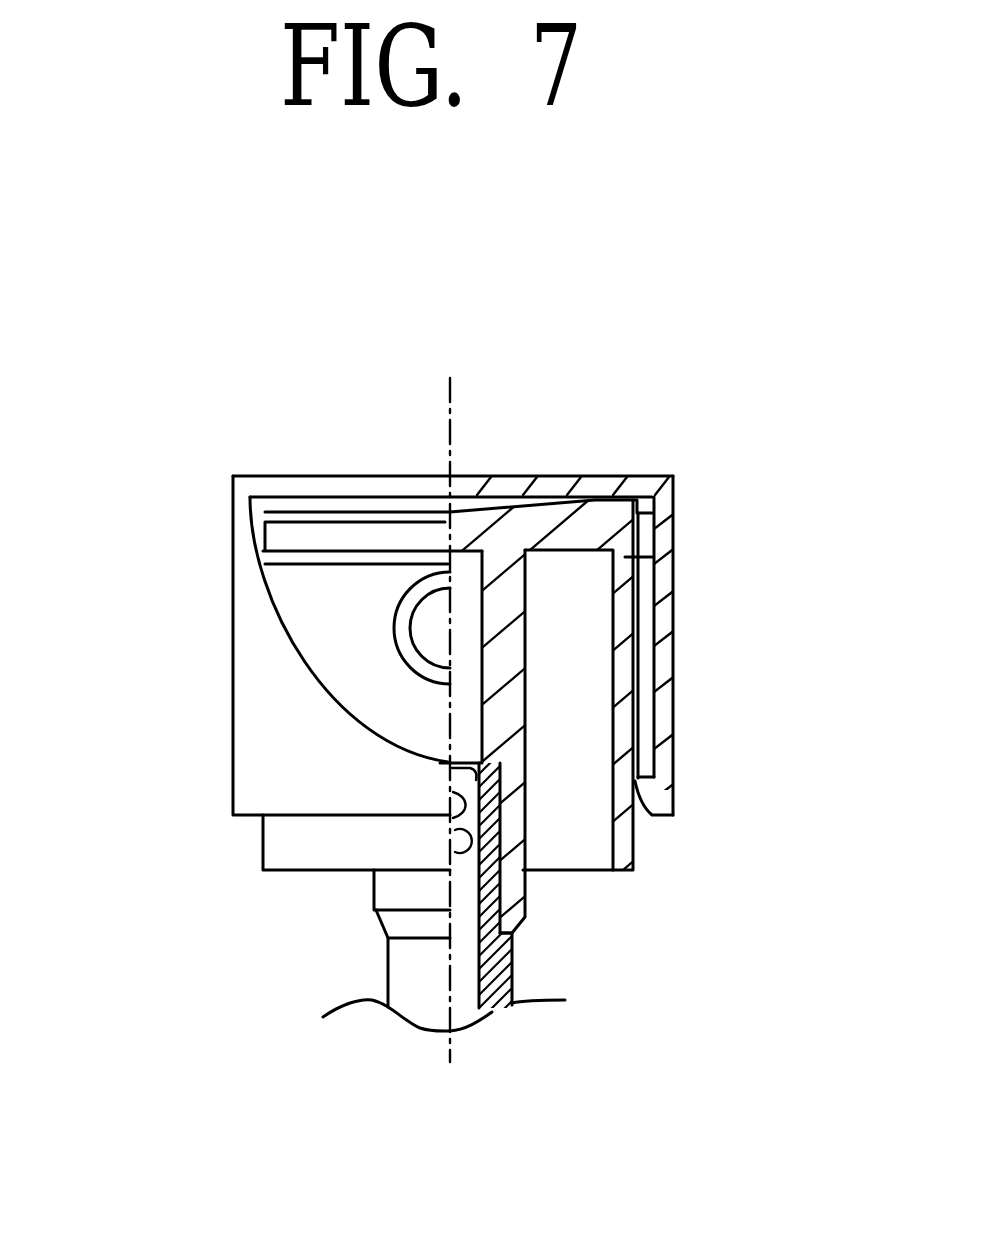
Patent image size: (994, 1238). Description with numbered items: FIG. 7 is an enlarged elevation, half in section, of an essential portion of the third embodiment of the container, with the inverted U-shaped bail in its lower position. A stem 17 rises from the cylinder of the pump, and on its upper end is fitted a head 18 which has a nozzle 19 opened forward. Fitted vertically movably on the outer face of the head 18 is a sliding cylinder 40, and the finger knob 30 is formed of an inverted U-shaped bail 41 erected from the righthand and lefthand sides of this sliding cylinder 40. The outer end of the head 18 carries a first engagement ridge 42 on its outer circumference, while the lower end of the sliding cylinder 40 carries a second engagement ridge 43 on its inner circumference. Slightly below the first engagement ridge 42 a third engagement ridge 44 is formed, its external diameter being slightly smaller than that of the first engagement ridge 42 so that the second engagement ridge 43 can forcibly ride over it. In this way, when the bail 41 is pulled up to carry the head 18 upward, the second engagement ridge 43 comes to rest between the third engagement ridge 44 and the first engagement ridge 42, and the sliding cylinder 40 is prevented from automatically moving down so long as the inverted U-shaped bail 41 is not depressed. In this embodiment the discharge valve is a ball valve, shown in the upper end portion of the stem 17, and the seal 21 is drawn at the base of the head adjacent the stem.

The finger knob 30 is at (552, 462).
The sliding cylinder 40 is at (233, 719).
The head 18 is at (298, 603).
The inverted U-shaped bail 41 is at (627, 474).
The first engagement ridge 42 is at (648, 508).
The third engagement ridge 44 is at (640, 563).
The second engagement ridge 43 is at (645, 793).
The stem 17 is at (513, 957).
The nozzle 19 is at (438, 630).
The seal 21 is at (452, 820).